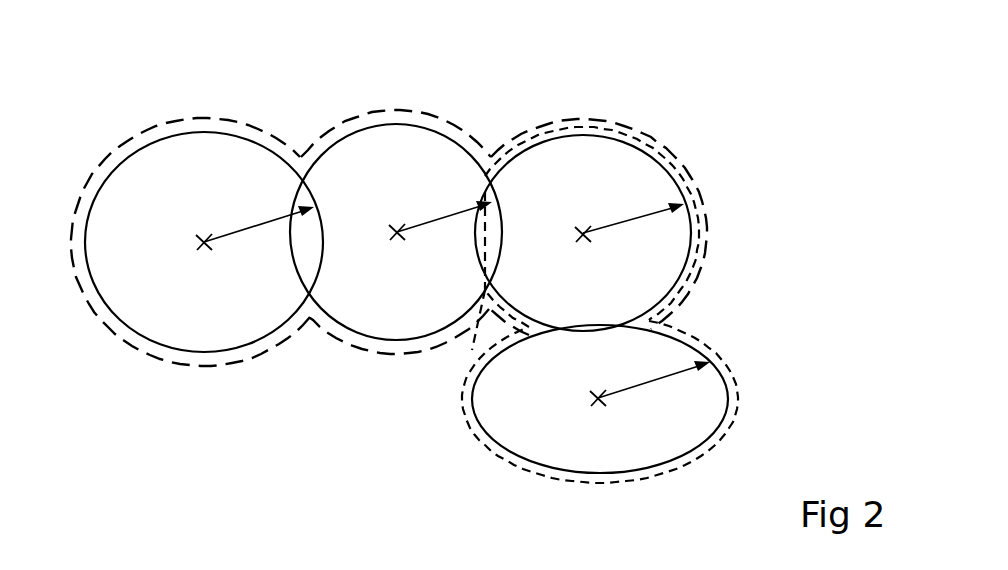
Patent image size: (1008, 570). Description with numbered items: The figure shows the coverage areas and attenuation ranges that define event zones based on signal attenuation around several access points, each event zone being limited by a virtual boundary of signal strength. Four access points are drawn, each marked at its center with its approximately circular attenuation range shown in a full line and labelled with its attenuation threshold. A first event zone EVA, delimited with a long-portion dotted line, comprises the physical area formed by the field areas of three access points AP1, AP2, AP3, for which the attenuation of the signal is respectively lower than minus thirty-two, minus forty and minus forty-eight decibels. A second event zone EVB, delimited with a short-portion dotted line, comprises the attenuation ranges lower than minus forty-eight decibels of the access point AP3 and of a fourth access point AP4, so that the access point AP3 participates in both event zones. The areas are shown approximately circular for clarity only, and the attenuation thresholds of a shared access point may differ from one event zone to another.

The first event zone EVA is at (231, 122).
The second event zone EVB is at (733, 376).
The access point AP1 is at (204, 244).
The access point AP2 is at (397, 234).
The access point AP3 is at (582, 237).
The fourth access point AP4 is at (598, 400).